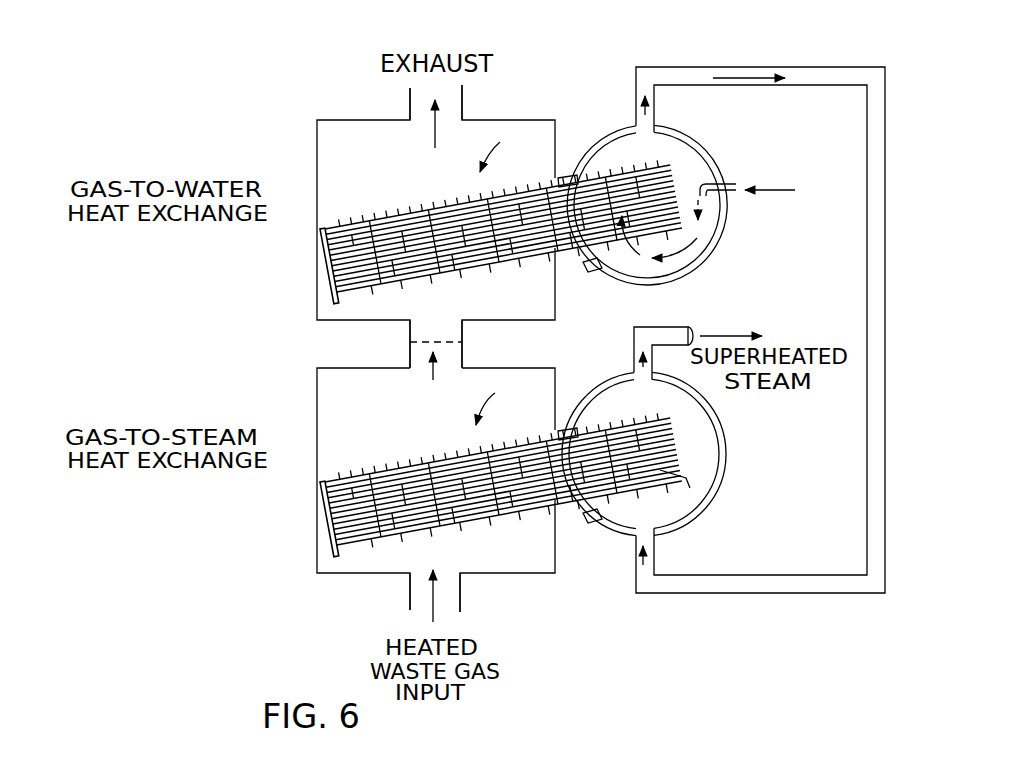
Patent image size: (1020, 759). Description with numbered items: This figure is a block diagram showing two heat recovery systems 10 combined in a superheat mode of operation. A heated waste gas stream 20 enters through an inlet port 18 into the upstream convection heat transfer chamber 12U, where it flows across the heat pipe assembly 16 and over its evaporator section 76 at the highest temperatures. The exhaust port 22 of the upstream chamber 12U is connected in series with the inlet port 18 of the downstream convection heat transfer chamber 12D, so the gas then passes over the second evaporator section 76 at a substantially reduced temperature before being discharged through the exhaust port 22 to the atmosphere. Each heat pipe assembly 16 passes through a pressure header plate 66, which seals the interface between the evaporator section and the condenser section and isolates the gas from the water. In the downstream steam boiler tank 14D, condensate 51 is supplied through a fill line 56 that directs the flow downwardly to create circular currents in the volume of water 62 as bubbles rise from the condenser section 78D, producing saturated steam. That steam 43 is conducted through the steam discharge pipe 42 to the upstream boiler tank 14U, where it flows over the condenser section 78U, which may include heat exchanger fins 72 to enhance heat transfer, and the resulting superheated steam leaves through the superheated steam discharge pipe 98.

The heat recovery system 10 is at (600, 81).
The downstream convection heat transfer chamber 12D is at (378, 124).
The upstream convection heat transfer chamber 12U is at (555, 368).
The steam boiler tank 14D is at (700, 146).
The steam boiler tank 14U is at (722, 442).
The heat pipe assembly 16 is at (503, 277).
The inlet port 18 is at (462, 342).
The heated waste gas stream 20 is at (434, 128).
The exhaust port 22 is at (466, 102).
The steam discharge pipe 42 is at (838, 68).
The steam 43 is at (742, 78).
The condensate 51 is at (793, 191).
The fill line 56 is at (733, 184).
The volume of water 62 is at (702, 240).
The pressure header plate 66 is at (593, 270).
The heat exchanger fins 72 is at (684, 479).
The evaporator section 76 is at (391, 192).
The condenser section 78D is at (648, 161).
The condenser section 78U is at (648, 410).
The superheated steam discharge pipe 98 is at (664, 327).